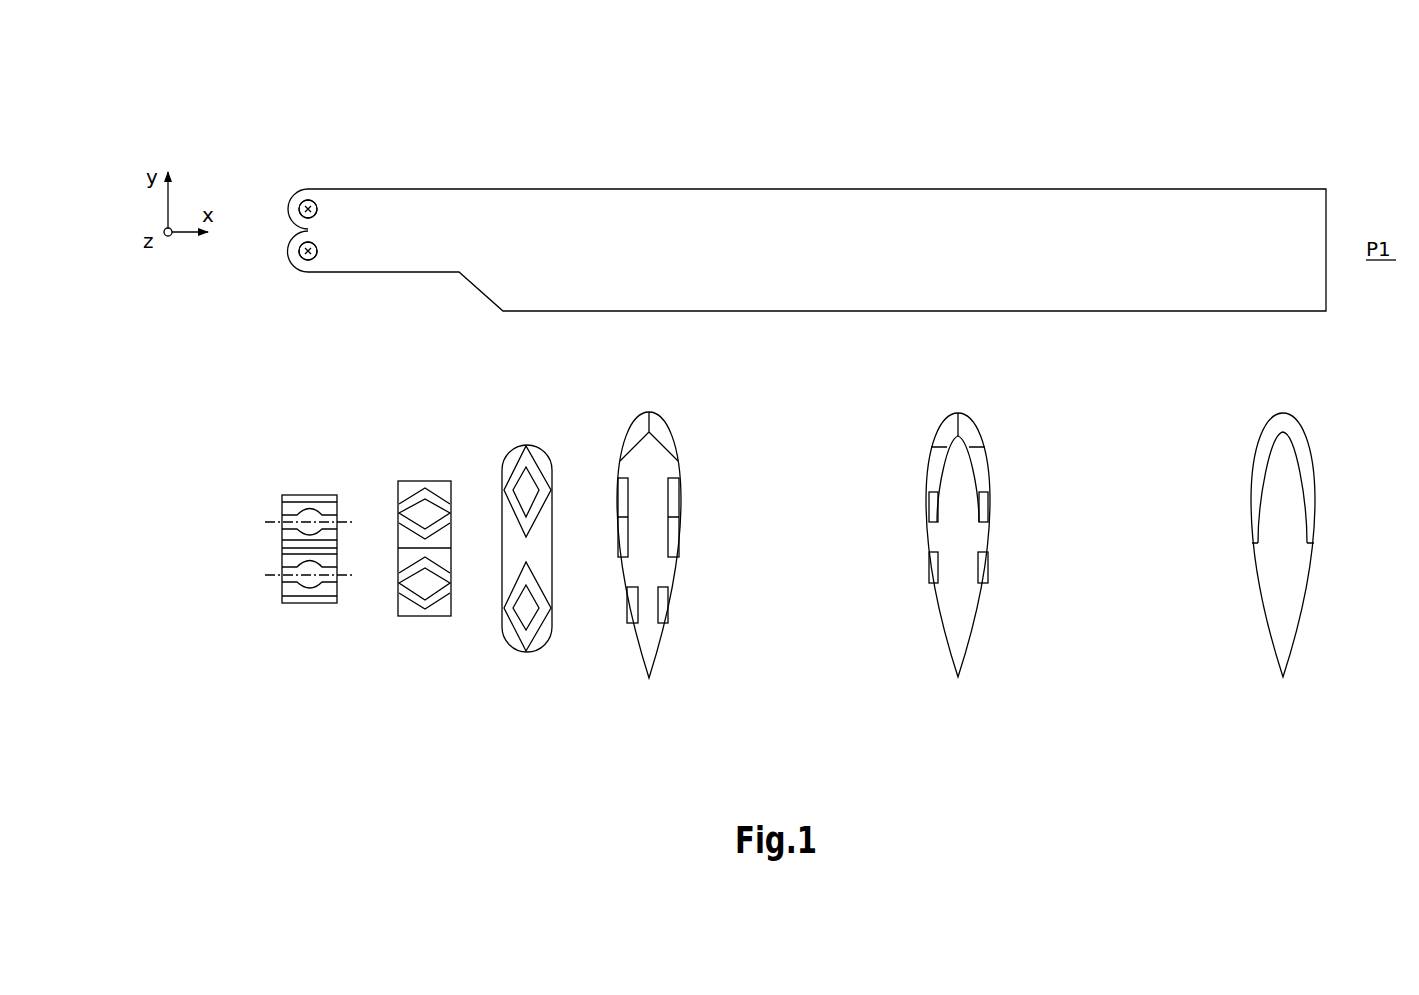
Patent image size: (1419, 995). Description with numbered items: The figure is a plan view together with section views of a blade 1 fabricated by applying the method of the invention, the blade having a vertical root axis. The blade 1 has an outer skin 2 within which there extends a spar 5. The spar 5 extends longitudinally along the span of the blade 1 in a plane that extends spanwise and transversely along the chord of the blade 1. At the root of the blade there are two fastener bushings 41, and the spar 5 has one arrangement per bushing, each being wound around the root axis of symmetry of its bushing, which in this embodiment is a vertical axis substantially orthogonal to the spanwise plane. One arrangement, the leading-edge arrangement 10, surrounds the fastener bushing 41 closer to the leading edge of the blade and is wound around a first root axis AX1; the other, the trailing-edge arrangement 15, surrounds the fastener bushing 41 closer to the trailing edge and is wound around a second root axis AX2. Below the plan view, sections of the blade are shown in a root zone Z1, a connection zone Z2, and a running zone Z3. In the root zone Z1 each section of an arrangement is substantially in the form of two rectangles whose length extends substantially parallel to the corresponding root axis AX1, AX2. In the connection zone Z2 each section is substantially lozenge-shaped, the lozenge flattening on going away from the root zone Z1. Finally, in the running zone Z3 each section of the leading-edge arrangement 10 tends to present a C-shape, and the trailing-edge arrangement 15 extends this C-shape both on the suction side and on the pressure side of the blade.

The blade 1 is at (1347, 211).
The outer skin 2 is at (872, 189).
The spar 5 is at (276, 258).
The leading-edge arrangement 10 is at (289, 191).
The trailing-edge arrangement 15 is at (290, 267).
The fastener bushing 41 is at (317, 207).
The first root axis AX1 is at (308, 200).
The second root axis AX2 is at (308, 261).
The root zone Z1 is at (308, 696).
The connection zone Z2 is at (557, 694).
The running zone Z3 is at (1319, 693).